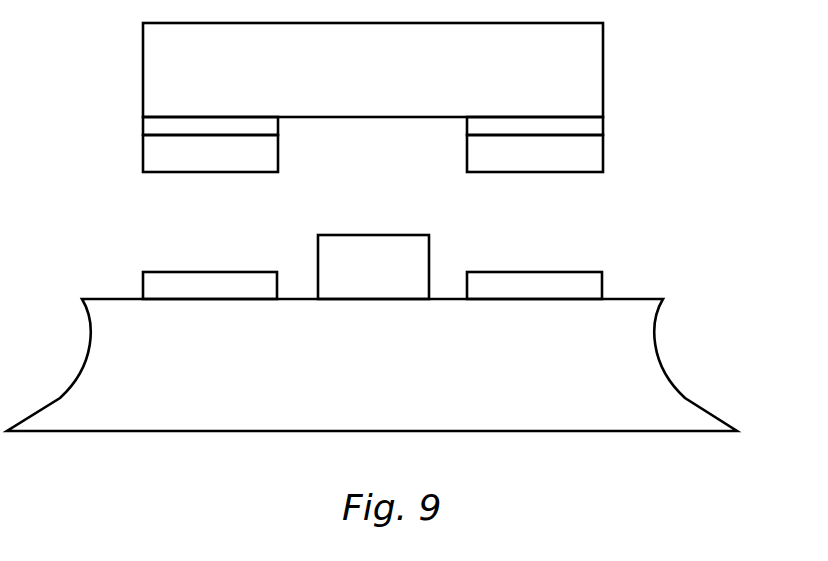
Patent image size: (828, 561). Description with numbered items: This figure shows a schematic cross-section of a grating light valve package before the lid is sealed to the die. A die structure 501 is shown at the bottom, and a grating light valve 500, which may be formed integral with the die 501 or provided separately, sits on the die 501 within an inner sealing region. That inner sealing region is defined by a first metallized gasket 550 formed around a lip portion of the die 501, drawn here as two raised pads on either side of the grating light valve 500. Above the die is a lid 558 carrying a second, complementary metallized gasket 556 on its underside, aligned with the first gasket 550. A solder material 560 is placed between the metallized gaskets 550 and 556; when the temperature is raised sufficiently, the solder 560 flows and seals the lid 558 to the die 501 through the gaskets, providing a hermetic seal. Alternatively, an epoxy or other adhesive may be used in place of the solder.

The grating light valve 500 is at (389, 281).
The die structure 501 is at (660, 358).
The first metallized gasket 550 is at (143, 282).
The second metallized gasket 556 is at (143, 127).
The lid 558 is at (603, 69).
The solder material 560 is at (143, 162).